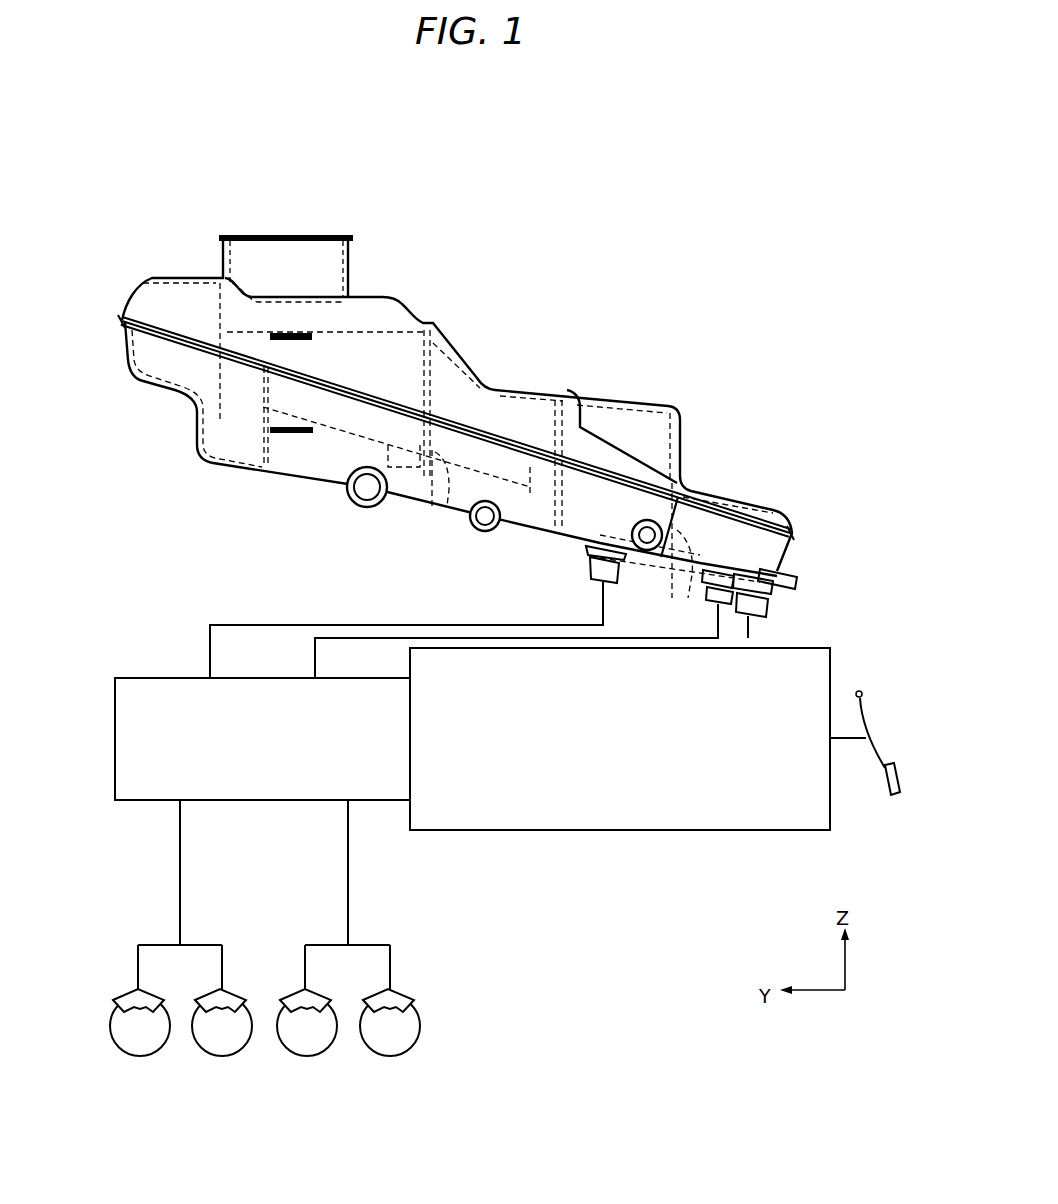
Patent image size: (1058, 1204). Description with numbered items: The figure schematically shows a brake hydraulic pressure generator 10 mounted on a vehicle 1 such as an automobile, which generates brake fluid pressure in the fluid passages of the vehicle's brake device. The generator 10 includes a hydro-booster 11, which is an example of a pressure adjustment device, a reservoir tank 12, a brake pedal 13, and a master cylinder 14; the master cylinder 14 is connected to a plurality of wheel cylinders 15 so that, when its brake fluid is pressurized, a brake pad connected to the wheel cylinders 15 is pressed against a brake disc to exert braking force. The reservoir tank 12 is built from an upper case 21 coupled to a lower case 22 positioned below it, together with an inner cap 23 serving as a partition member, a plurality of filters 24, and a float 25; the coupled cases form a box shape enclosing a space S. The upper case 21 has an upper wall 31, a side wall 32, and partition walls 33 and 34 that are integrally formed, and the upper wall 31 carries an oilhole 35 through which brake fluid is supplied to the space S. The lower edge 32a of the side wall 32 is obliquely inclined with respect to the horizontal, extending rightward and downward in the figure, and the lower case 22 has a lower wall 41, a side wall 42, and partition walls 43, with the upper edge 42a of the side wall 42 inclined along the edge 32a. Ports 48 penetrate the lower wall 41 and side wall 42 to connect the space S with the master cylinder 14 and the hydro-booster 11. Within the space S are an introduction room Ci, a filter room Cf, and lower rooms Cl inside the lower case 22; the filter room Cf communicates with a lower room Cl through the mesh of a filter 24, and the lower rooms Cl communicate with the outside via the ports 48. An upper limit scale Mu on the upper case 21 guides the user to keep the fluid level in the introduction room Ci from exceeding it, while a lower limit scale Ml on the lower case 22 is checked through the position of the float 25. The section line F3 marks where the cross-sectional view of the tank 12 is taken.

The vehicle 1 is at (130, 136).
The brake hydraulic pressure generator 10 is at (464, 419).
The hydro-booster 11 is at (627, 830).
The reservoir tank 12 is at (633, 378).
The brake pedal 13 is at (889, 766).
The master cylinder 14 is at (270, 800).
The wheel cylinders 15 is at (137, 992).
The upper case 21 is at (660, 428).
The lower case 22 is at (226, 445).
The inner cap 23 is at (390, 297).
The filters 24 is at (340, 440).
The float 25 is at (407, 495).
The upper wall 31 is at (465, 360).
The side wall 32 is at (118, 297).
The edge 32a is at (118, 328).
The partition wall 33 is at (217, 300).
The partition wall 34 is at (556, 422).
The oilhole 35 is at (322, 226).
The lower wall 41 is at (544, 538).
The side wall 42 is at (123, 370).
The edge 42a is at (800, 543).
The partition walls 43 is at (260, 440).
The ports 48 is at (590, 583).
The upper limit scale Mu is at (300, 330).
The lower limit scale Ml is at (290, 437).
The introduction room Ci is at (280, 300).
The filter room Cf is at (520, 385).
The lower rooms Cl is at (503, 540).
The space S is at (182, 392).
The line F3- F3 is at (117, 298).